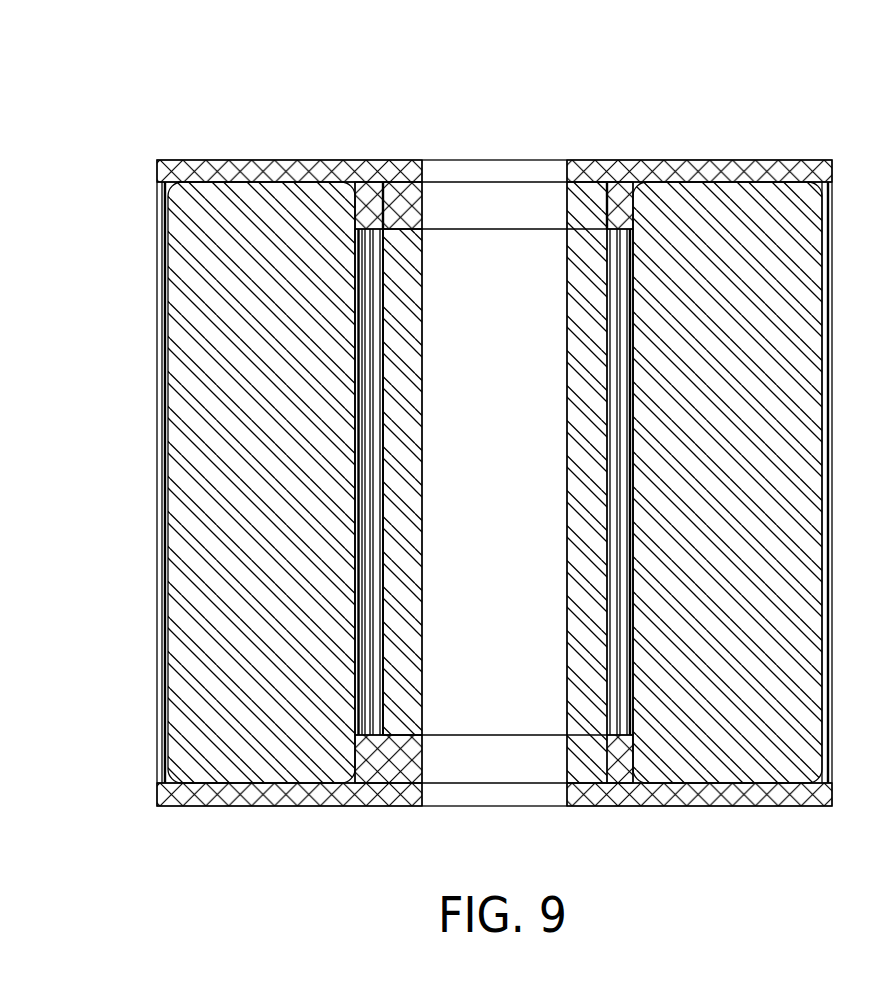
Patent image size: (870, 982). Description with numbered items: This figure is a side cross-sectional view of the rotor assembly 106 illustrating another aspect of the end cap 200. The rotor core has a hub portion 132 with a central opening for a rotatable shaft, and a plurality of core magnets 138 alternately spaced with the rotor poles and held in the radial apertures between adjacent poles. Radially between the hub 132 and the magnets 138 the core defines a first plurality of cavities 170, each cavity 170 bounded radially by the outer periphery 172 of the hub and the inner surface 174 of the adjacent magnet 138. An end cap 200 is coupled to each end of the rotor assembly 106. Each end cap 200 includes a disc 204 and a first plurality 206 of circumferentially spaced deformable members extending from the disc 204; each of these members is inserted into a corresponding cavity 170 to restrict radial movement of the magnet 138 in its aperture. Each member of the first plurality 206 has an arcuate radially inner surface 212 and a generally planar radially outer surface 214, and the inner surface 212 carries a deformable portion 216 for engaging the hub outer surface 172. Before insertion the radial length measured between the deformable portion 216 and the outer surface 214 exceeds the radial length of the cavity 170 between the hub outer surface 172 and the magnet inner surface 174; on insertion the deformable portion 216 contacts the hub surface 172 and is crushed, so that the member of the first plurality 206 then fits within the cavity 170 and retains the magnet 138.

The rotor assembly 106 is at (166, 83).
The hub portion 132 is at (402, 258).
The core magnet 138 is at (215, 263).
The cavity 170 is at (340, 422).
The outer periphery of the hub 172 is at (380, 372).
The inner surface of the magnet 174 is at (357, 341).
The end cap 200 is at (431, 800).
The disc 204 is at (185, 798).
The first plurality of deformable members 206 is at (372, 768).
The arcuate radially inner surface 212 is at (386, 222).
The planar radially outer surface 214 is at (357, 193).
The deformable portion 216 is at (374, 216).